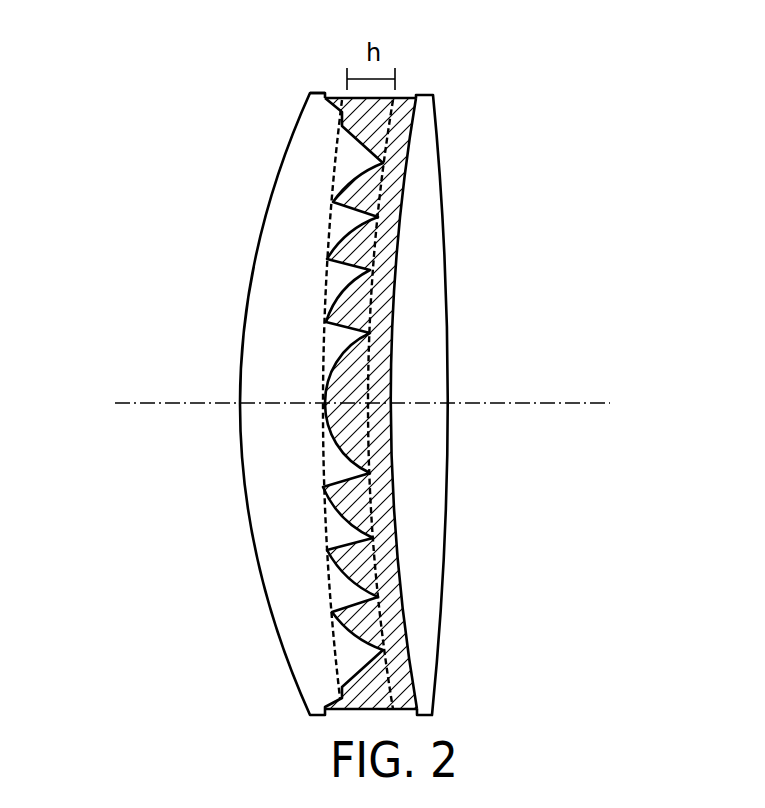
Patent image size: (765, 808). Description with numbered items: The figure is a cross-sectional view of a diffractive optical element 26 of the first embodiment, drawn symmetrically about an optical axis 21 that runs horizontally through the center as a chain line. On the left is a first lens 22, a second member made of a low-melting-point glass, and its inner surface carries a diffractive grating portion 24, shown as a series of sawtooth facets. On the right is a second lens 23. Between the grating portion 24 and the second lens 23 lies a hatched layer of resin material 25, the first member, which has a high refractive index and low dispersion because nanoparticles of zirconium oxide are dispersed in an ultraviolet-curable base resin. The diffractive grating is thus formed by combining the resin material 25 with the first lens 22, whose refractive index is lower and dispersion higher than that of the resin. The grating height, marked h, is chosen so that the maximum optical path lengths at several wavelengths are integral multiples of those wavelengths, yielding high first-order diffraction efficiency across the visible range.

The optical axis 21 is at (186, 405).
The first lens 22 is at (275, 265).
The second lens 23 is at (422, 198).
The diffractive grating portion 24 is at (345, 583).
The resin material 25 is at (380, 573).
The diffractive optical element 26 is at (312, 80).